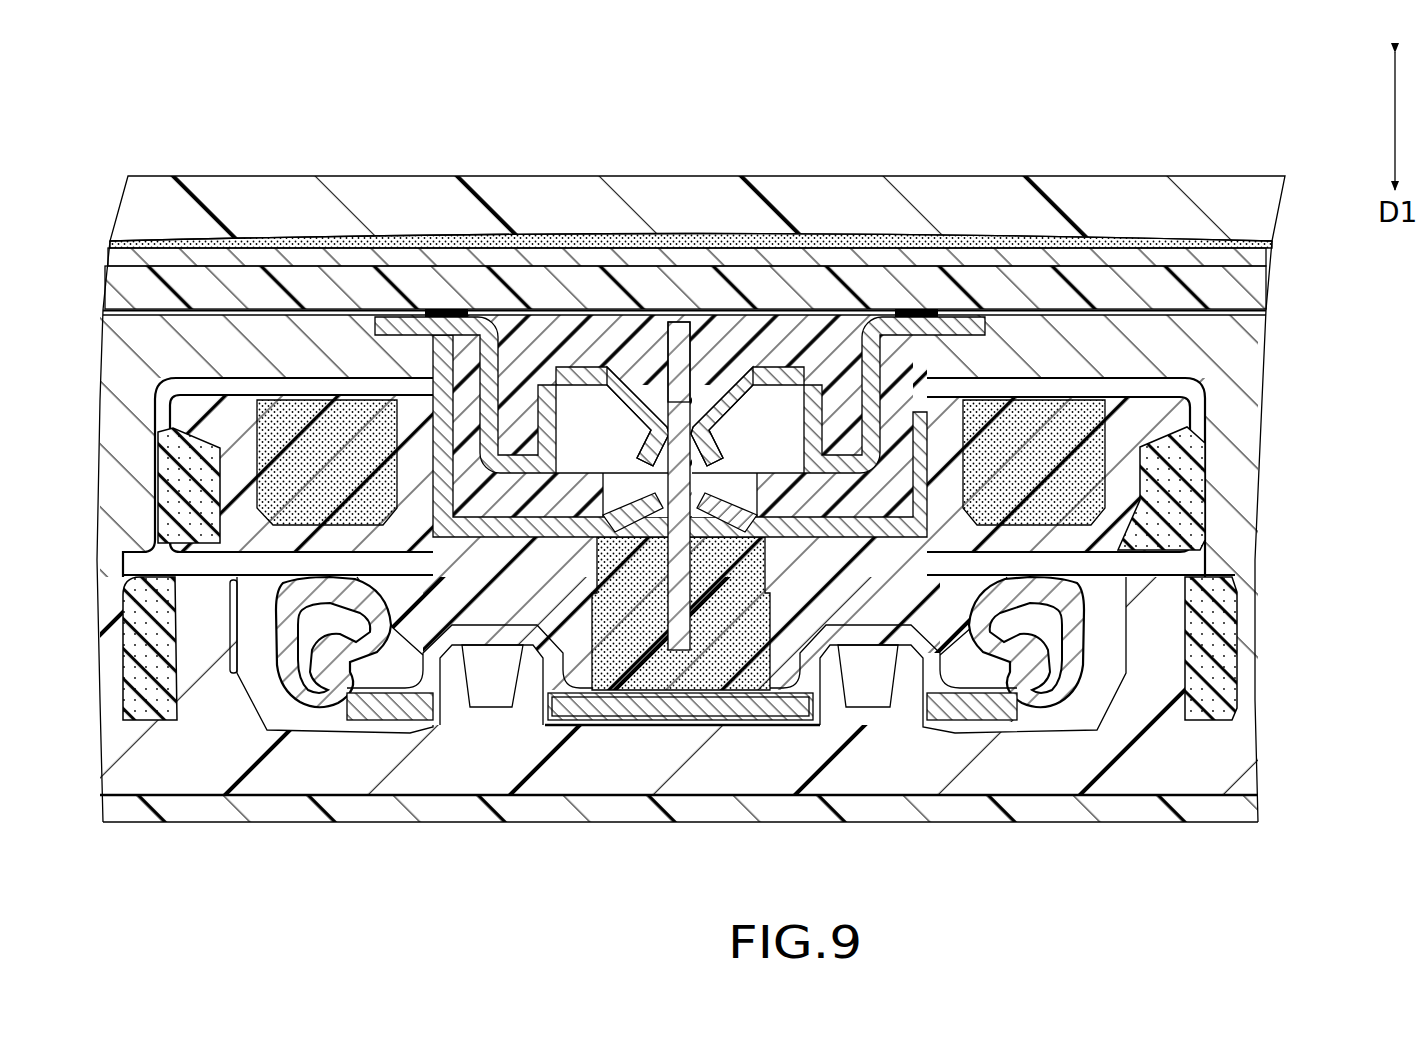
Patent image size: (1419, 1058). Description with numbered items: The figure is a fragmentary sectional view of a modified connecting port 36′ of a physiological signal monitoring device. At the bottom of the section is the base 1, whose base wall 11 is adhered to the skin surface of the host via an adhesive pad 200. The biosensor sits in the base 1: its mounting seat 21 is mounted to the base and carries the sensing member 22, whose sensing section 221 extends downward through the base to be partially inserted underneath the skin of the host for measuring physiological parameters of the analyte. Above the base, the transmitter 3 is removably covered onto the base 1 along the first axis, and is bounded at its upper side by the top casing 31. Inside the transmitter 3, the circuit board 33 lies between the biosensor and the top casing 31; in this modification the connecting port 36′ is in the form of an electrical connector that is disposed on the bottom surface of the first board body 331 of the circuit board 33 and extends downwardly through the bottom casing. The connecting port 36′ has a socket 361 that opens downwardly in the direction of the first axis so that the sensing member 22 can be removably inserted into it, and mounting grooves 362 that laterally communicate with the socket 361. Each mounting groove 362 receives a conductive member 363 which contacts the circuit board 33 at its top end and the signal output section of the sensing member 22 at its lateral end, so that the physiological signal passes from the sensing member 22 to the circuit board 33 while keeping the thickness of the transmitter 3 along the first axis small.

The base 1 is at (684, 584).
The base wall 11 is at (973, 800).
The adhesive pad 200 is at (684, 585).
The mounting seat 21 is at (258, 563).
The sensing member 22 is at (715, 362).
The sensing section 221 is at (677, 322).
The transmitter 3 is at (695, 174).
The top casing 31 is at (1077, 176).
The circuit board 33 is at (291, 262).
The first board body 331 is at (410, 270).
The connecting port 36′ is at (680, 496).
The socket 361 is at (655, 528).
The mounting grooves 362 is at (680, 277).
The conductive member 363 is at (588, 372).